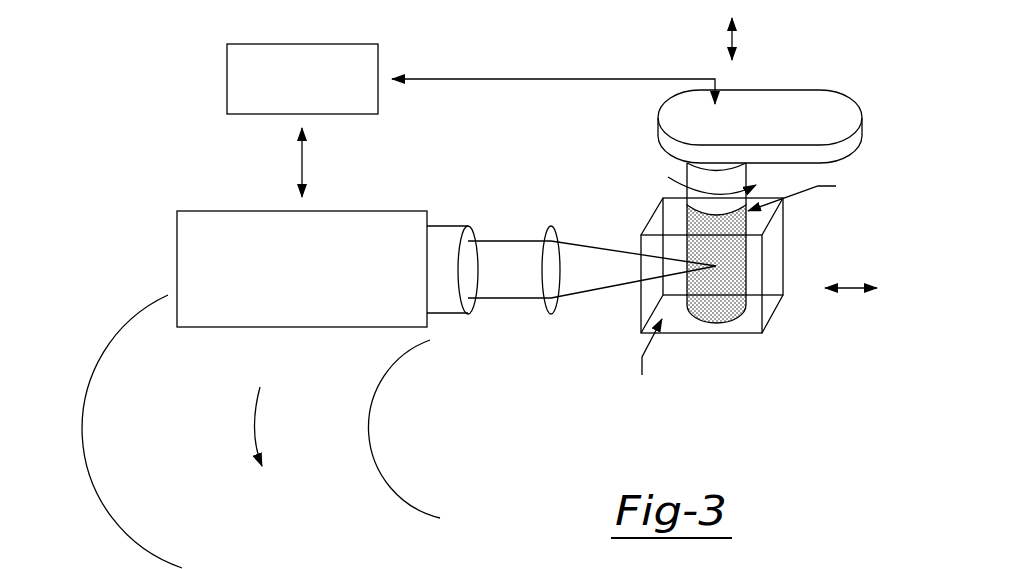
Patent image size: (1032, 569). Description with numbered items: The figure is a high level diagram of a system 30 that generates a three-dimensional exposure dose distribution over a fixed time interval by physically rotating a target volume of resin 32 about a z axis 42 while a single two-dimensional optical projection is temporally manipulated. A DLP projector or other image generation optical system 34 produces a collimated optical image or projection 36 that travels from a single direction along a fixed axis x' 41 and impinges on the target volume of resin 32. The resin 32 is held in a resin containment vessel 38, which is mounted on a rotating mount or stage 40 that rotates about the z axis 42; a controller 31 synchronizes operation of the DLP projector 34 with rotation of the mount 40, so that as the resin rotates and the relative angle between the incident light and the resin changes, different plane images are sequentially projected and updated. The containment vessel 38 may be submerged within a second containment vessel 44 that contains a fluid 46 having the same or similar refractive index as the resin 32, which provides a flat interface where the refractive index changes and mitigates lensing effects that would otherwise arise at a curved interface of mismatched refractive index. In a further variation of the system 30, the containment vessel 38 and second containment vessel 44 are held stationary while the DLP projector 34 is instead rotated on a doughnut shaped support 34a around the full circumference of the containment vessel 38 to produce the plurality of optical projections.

The system 30 is at (168, 122).
The controller 31 is at (243, 44).
The target volume of resin 32 is at (718, 245).
The DLP projector 34 is at (224, 210).
The doughnut shaped support 34a is at (122, 392).
The collimated optical image or projection 36 is at (518, 241).
The resin containment vessel 38 is at (687, 205).
The rotating mount or stage 40 is at (678, 117).
The x' axis 41 is at (857, 292).
The z axis 42 is at (730, 42).
The second containment vessel 44 is at (785, 232).
The fluid 46 is at (747, 323).